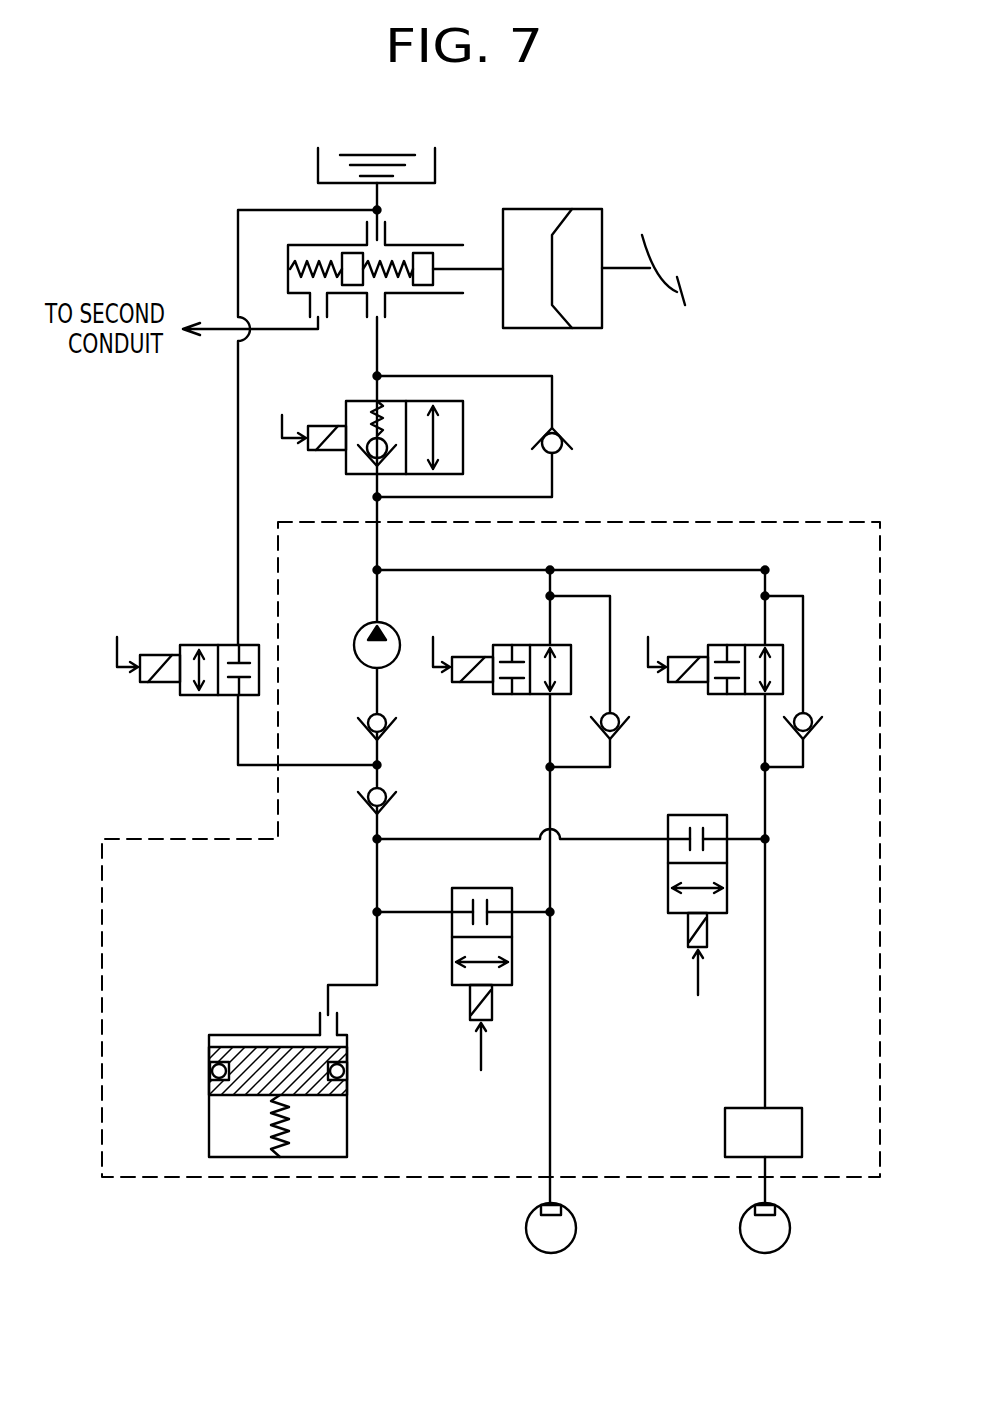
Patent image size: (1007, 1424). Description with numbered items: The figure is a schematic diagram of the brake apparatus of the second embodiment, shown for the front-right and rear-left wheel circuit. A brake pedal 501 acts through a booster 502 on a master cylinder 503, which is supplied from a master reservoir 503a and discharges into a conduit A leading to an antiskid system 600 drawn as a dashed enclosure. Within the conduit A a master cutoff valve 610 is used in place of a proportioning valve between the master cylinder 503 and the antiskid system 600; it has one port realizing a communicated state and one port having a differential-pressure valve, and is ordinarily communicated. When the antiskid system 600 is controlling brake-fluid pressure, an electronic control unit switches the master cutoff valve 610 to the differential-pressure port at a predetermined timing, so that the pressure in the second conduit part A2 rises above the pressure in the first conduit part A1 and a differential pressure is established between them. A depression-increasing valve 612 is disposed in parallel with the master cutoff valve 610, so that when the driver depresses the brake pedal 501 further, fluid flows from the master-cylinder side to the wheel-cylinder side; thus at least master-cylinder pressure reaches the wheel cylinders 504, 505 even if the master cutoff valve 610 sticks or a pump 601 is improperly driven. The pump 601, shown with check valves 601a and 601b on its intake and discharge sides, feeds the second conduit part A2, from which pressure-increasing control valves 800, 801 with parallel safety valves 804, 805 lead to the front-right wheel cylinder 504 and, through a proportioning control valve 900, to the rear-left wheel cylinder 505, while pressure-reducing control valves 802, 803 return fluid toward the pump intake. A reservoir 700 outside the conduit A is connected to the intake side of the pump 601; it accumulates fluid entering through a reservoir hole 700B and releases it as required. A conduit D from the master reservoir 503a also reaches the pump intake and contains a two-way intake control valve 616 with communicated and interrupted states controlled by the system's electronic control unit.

The master reservoir 503a is at (320, 160).
The master cylinder 503 is at (306, 255).
The booster 502 is at (560, 209).
The brake pedal 501 is at (645, 247).
The conduit A is at (384, 332).
The first conduit part A1 is at (380, 368).
The second conduit part A2 is at (638, 570).
The conduit D is at (239, 548).
The master cutoff valve 610 is at (358, 401).
The depression-increasing valve 612 is at (565, 440).
The antiskid system 600 is at (790, 522).
The pump 601 is at (354, 641).
The pump inlet check valve 601a is at (362, 805).
The pump outlet check valve 601b is at (362, 731).
The two-way intake control valve 616 is at (208, 645).
The pressure-increasing control valve 800 is at (510, 645).
The pressure-increasing control valve 801 is at (726, 645).
The pressure-reducing control valve 802 is at (452, 968).
The pressure-reducing control valve 803 is at (668, 890).
The safety valve 804 is at (617, 731).
The safety valve 805 is at (810, 731).
The reservoir 700 is at (191, 1049).
The reservoir hole 700B is at (336, 1010).
The proportioning control valve 900 is at (790, 1108).
The wheel cylinder 504 is at (560, 1206).
The wheel cylinder 505 is at (773, 1206).